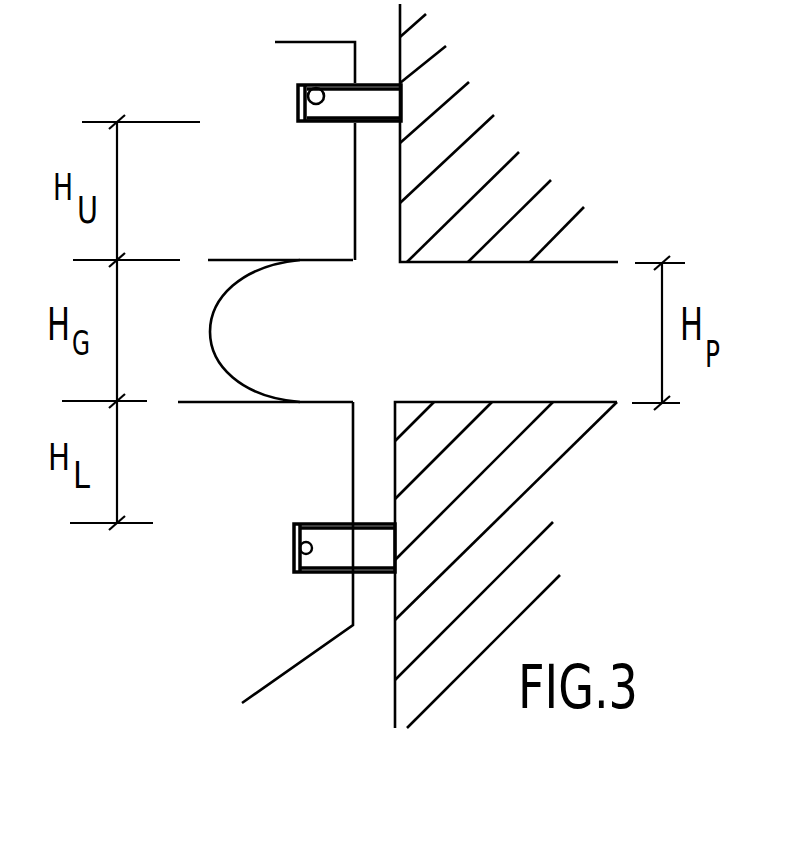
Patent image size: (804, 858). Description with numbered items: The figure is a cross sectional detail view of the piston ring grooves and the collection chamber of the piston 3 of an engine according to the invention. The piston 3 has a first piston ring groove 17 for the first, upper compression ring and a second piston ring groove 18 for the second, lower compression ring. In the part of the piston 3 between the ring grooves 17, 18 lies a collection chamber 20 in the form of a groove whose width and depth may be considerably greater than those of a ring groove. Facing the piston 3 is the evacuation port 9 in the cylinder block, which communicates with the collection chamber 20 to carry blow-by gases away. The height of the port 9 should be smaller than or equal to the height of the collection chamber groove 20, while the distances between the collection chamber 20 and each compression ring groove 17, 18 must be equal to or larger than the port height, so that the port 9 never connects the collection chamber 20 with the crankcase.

The piston 3 is at (242, 222).
The evacuation port 9 is at (578, 290).
The first piston ring groove 17 is at (315, 84).
The second piston ring groove 18 is at (294, 562).
The collection chamber 20 is at (182, 355).